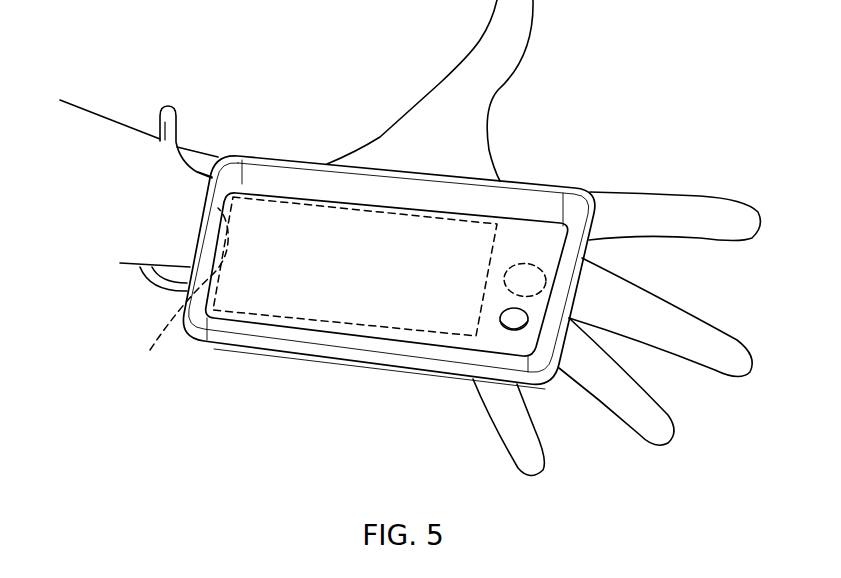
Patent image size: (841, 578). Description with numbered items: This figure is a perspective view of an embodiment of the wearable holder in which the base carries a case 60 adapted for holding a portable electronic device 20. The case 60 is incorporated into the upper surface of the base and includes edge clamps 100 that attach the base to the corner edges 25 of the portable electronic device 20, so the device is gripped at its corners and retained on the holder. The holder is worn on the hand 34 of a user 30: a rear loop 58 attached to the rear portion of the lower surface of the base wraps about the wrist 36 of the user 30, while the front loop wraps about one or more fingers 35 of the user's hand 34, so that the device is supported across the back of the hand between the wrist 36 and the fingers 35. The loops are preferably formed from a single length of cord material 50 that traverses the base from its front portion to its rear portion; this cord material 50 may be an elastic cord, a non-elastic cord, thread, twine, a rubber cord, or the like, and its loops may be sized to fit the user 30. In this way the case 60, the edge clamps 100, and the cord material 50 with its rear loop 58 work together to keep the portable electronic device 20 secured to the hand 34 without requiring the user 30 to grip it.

The portable electronic device 20 is at (431, 275).
The corner edges 25 is at (612, 178).
The user 30 is at (74, 98).
The user's hand 34 is at (397, 71).
The fingers 35 is at (693, 210).
The wrist 36 is at (192, 153).
The cord material 50 is at (200, 167).
The rear loop 58 is at (168, 107).
The case 60 is at (330, 312).
The edge clamps 100 is at (423, 197).